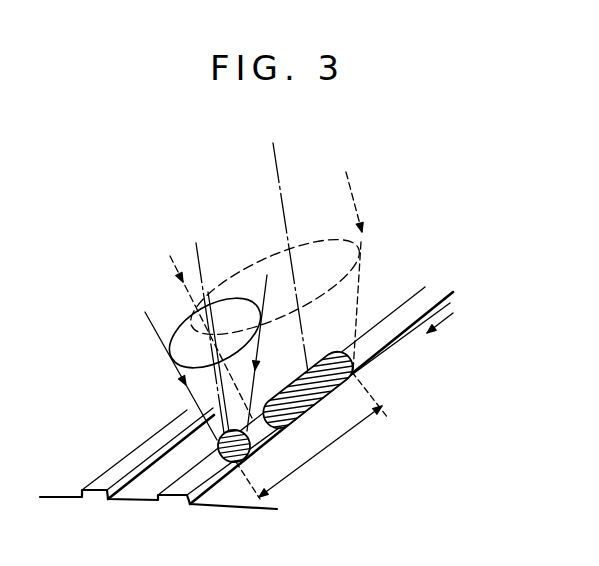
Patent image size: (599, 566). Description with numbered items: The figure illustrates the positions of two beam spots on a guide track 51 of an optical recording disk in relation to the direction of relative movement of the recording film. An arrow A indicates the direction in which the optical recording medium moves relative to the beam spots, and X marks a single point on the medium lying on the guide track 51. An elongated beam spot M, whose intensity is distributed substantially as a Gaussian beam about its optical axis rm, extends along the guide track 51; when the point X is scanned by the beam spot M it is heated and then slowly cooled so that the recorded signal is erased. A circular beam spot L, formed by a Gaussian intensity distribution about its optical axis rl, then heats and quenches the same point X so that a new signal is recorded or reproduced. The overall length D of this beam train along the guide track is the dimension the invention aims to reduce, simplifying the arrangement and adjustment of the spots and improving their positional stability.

The guide track 51 is at (407, 310).
The elongated beam spot M is at (326, 360).
The circular beam spot L is at (237, 462).
The overall length of the beam train D is at (312, 435).
The point on the optical recording medium X is at (385, 333).
The direction of movement A is at (442, 334).
The optical axis of beam spot M rm is at (291, 254).
The optical axis of beam spot L rl is at (209, 330).